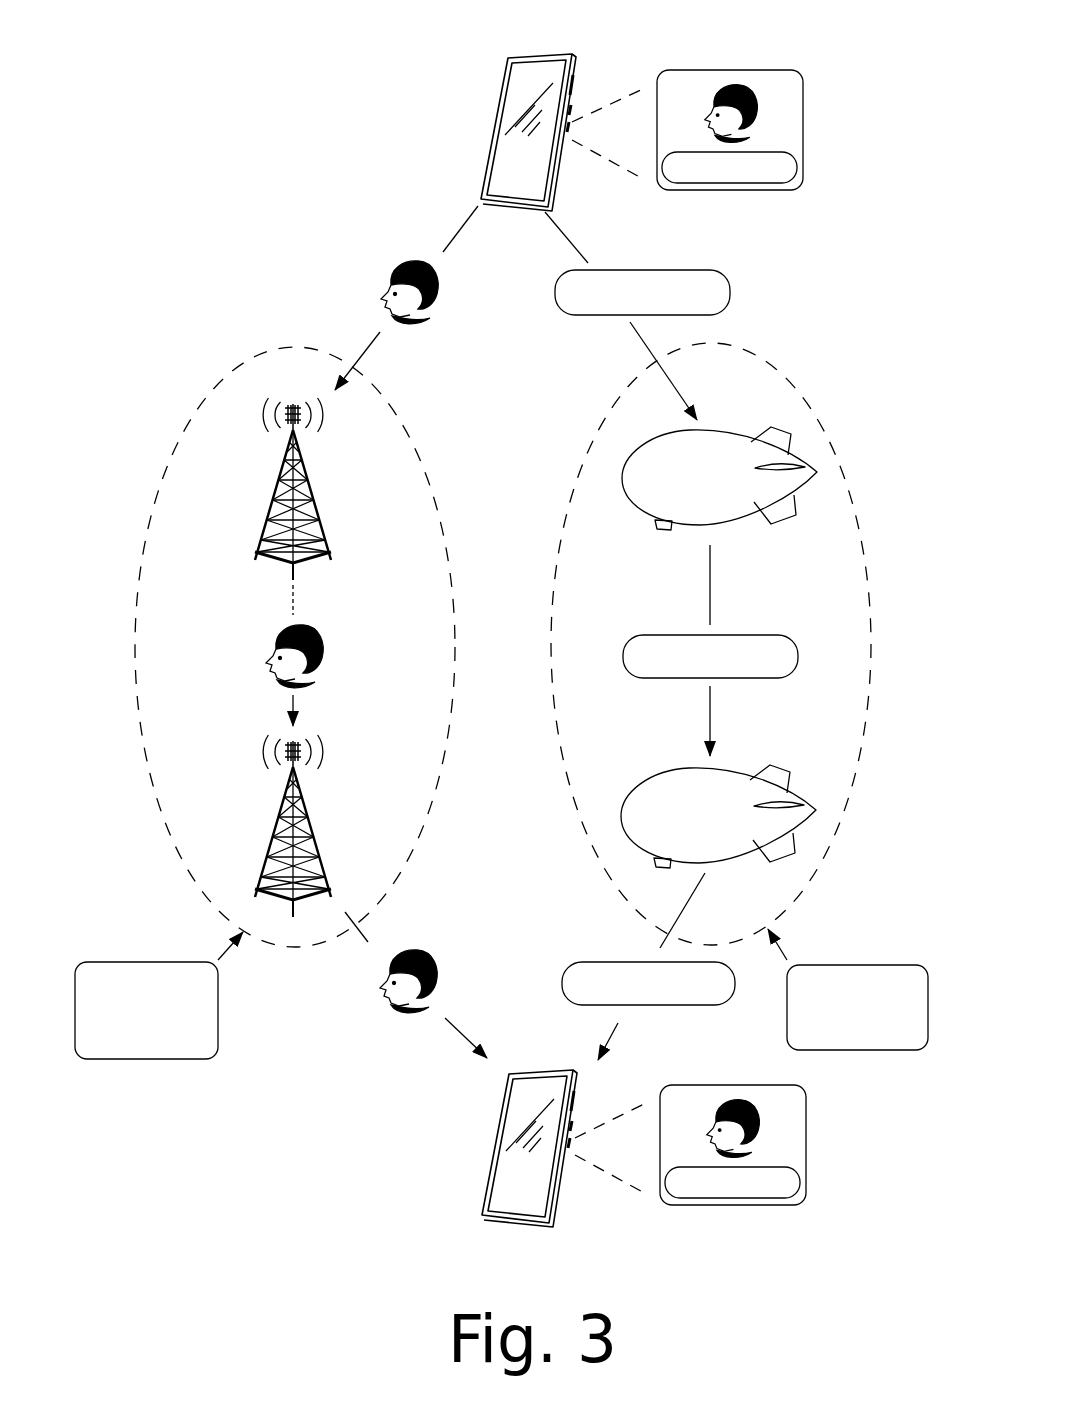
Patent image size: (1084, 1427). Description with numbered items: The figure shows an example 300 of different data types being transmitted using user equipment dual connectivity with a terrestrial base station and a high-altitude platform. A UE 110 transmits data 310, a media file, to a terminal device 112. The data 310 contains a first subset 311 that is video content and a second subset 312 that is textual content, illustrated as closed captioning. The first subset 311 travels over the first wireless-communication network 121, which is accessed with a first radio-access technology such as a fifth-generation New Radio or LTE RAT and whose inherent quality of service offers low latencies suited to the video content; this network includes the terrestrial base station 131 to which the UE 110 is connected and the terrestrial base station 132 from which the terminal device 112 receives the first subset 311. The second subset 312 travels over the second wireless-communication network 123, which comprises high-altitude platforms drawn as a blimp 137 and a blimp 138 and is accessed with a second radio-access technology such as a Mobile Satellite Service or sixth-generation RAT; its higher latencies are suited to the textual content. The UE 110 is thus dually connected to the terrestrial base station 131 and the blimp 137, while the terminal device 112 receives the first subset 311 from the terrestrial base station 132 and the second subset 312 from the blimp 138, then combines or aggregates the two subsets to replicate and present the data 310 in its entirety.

The example 300 is at (225, 48).
The UE 110 is at (492, 47).
The terminal device 112 is at (465, 1233).
The first wireless-communication network 121 is at (202, 388).
The second wireless-communication network 123 is at (808, 388).
The terrestrial base station 131 is at (248, 543).
The terrestrial base station 132 is at (252, 730).
The blimp 137 is at (677, 543).
The blimp 138 is at (675, 730).
The data 310 is at (806, 70).
The first subset 311 is at (372, 262).
The second subset 312 is at (740, 268).